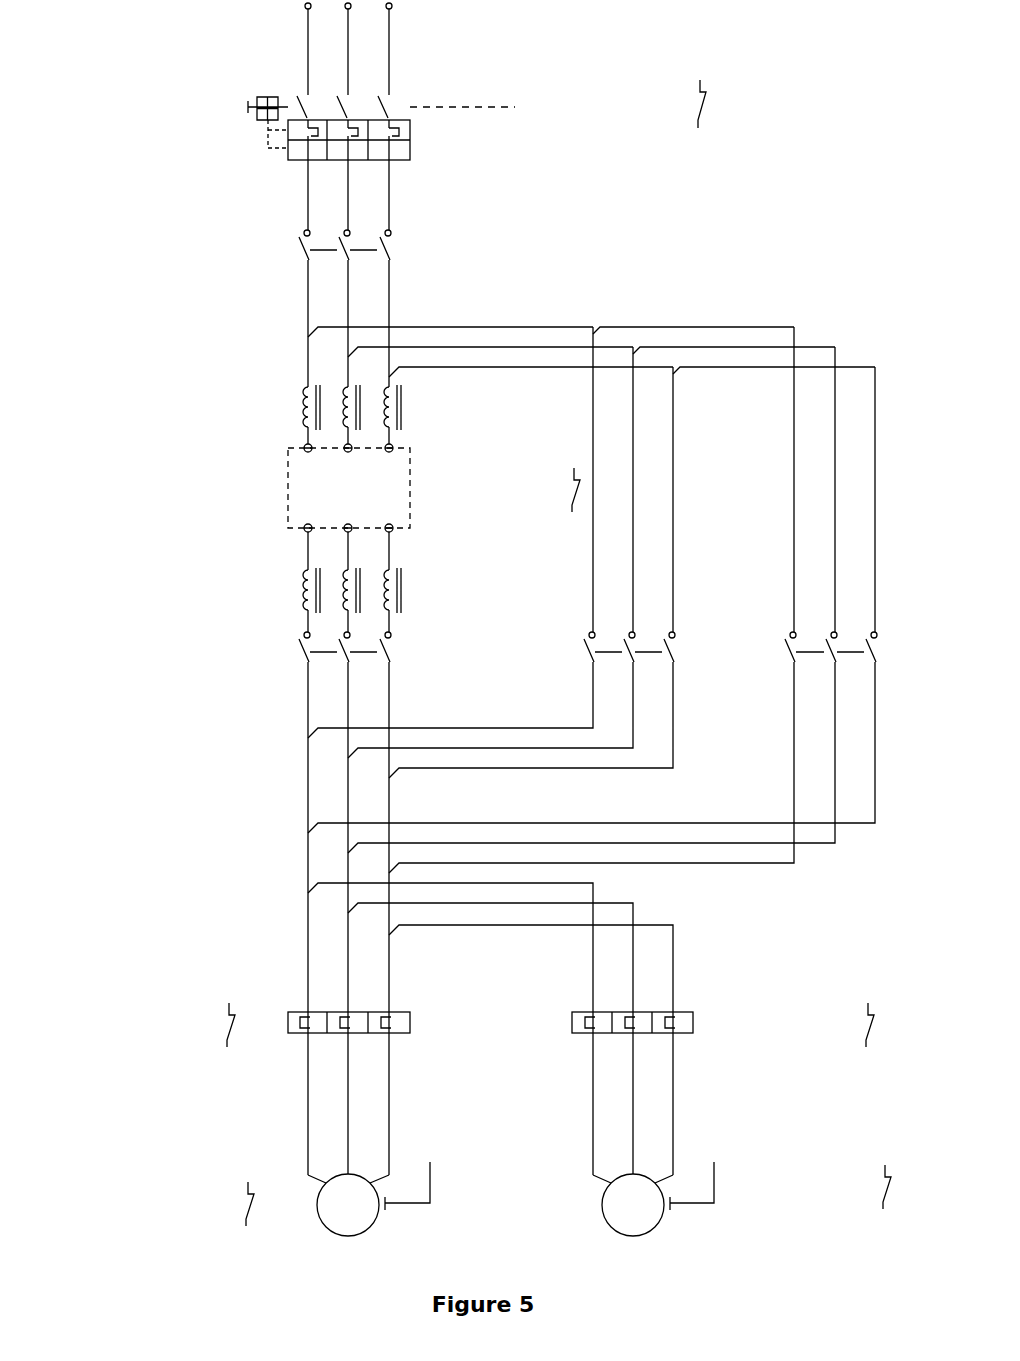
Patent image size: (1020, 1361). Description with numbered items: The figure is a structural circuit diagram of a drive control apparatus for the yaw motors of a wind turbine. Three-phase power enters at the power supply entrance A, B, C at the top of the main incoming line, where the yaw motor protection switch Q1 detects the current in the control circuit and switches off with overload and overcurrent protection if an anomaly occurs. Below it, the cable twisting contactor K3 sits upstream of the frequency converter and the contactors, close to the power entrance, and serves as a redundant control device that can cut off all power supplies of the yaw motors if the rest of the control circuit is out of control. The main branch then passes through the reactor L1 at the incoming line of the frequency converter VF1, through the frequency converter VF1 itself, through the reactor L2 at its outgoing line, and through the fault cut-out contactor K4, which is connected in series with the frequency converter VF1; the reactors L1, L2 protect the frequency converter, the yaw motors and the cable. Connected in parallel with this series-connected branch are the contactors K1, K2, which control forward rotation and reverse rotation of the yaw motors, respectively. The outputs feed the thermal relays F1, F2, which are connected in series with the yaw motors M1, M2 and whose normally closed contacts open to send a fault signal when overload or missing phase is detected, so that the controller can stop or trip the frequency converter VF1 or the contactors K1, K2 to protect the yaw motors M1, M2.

The power supply entrance phase A is at (289, 49).
The power supply entrance phase B is at (330, 49).
The power supply entrance phase C is at (371, 49).
The yaw motor protection switch Q1 is at (453, 155).
The cable twisting contactor K3 is at (324, 308).
The reactor L1 is at (329, 414).
The frequency converter VF1 is at (408, 507).
The reactor L2 is at (329, 600).
The fault cut-out contactor K4 is at (324, 822).
The contactor K1 is at (491, 552).
The contactor K2 is at (592, 600).
The thermal relay F1 is at (232, 1082).
The thermal relay F2 is at (702, 1080).
The yaw motor M1 is at (348, 1196).
The yaw motor M2 is at (715, 1202).